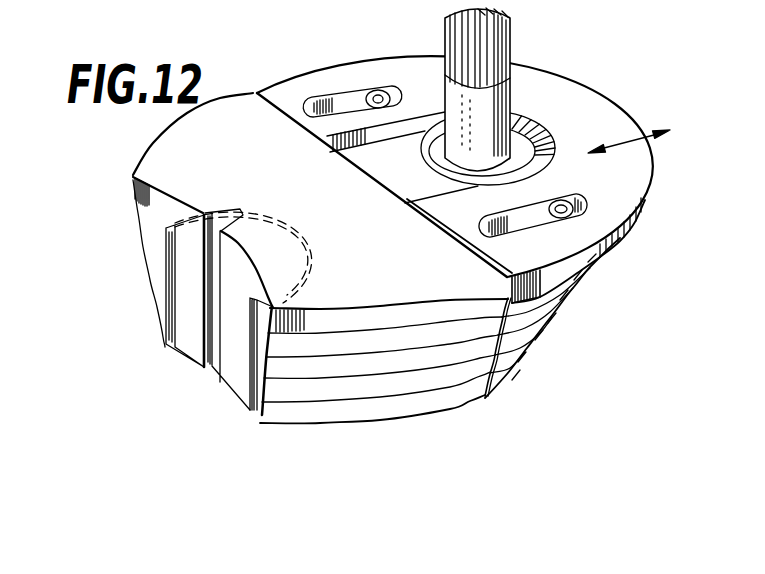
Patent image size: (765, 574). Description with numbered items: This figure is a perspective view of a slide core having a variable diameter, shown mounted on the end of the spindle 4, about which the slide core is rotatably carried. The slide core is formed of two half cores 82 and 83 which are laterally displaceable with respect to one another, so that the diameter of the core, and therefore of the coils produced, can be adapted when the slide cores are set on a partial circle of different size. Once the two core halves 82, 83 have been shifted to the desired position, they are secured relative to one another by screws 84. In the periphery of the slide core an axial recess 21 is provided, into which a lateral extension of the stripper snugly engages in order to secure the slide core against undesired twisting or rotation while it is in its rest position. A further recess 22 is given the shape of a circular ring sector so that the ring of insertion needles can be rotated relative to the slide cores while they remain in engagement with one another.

The spindle 4 is at (490, 100).
The axial recess 21 is at (213, 370).
The recess 22 is at (252, 410).
The half core 82 is at (447, 400).
The half core 83 is at (507, 378).
The screw 84 is at (378, 92).